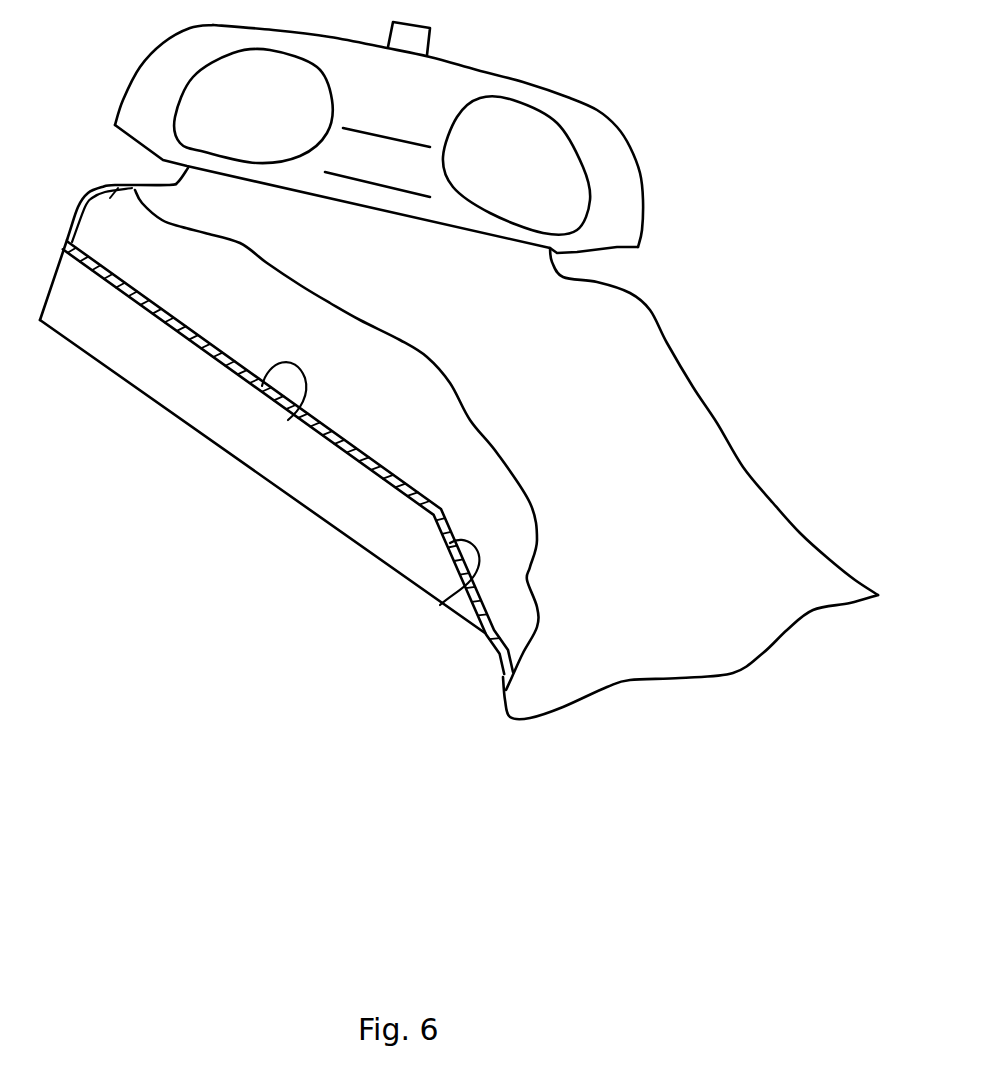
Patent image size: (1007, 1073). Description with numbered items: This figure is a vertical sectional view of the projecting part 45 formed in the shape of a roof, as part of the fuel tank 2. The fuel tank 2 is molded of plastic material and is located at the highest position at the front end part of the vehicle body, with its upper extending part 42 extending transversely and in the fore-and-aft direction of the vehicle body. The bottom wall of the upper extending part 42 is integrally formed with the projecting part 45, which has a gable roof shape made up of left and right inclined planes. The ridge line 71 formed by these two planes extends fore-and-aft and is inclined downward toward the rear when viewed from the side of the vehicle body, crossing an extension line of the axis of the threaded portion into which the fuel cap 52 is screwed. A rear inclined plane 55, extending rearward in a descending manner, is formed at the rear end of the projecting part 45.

The fuel tank 2 is at (747, 467).
The upper extending part 42 is at (640, 318).
The projecting part 45 is at (143, 368).
The fuel cap 52 is at (620, 132).
The rear inclined plane 55 is at (440, 605).
The ridge line 71 is at (290, 413).